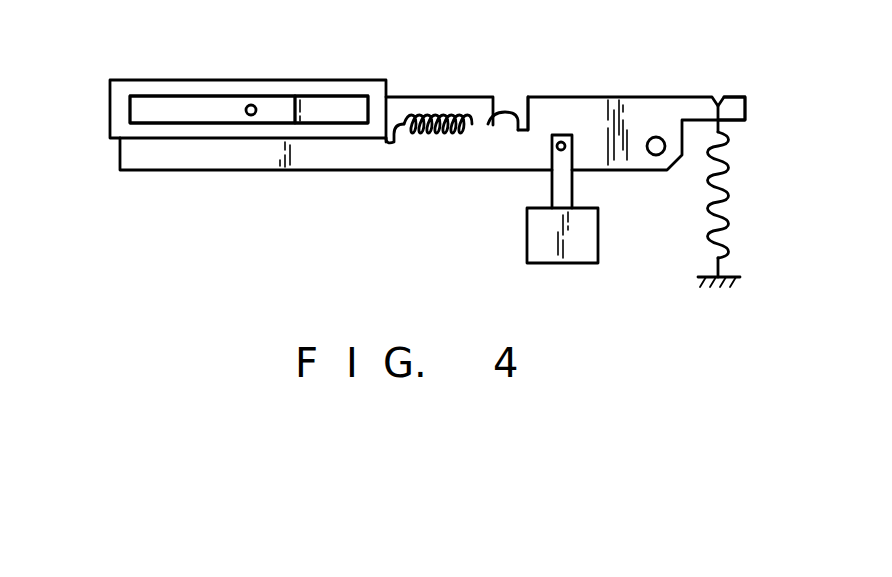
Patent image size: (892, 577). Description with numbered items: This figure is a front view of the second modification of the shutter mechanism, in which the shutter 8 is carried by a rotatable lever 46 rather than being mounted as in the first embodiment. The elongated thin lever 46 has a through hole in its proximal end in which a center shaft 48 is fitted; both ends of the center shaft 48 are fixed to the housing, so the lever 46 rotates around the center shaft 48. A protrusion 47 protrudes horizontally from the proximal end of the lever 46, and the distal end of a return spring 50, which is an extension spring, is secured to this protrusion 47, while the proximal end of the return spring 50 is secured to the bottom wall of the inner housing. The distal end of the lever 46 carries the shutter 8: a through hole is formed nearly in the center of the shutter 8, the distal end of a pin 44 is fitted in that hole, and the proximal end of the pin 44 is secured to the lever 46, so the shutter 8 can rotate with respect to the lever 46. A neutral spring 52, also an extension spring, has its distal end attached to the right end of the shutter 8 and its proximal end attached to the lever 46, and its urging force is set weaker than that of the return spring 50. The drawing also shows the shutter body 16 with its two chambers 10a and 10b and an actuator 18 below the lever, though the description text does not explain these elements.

The shutter 8 is at (172, 77).
The first test element chamber 10a is at (277, 80).
The second test element chamber 10b is at (352, 107).
The test element holder 16 is at (118, 112).
The pin 44 is at (250, 116).
The neutral spring 52 is at (478, 115).
The rotatable lever 46 is at (592, 108).
The center shaft 48 is at (659, 135).
The protrusion 47 is at (738, 97).
The actuator 18 is at (527, 225).
The return spring 50 is at (710, 177).